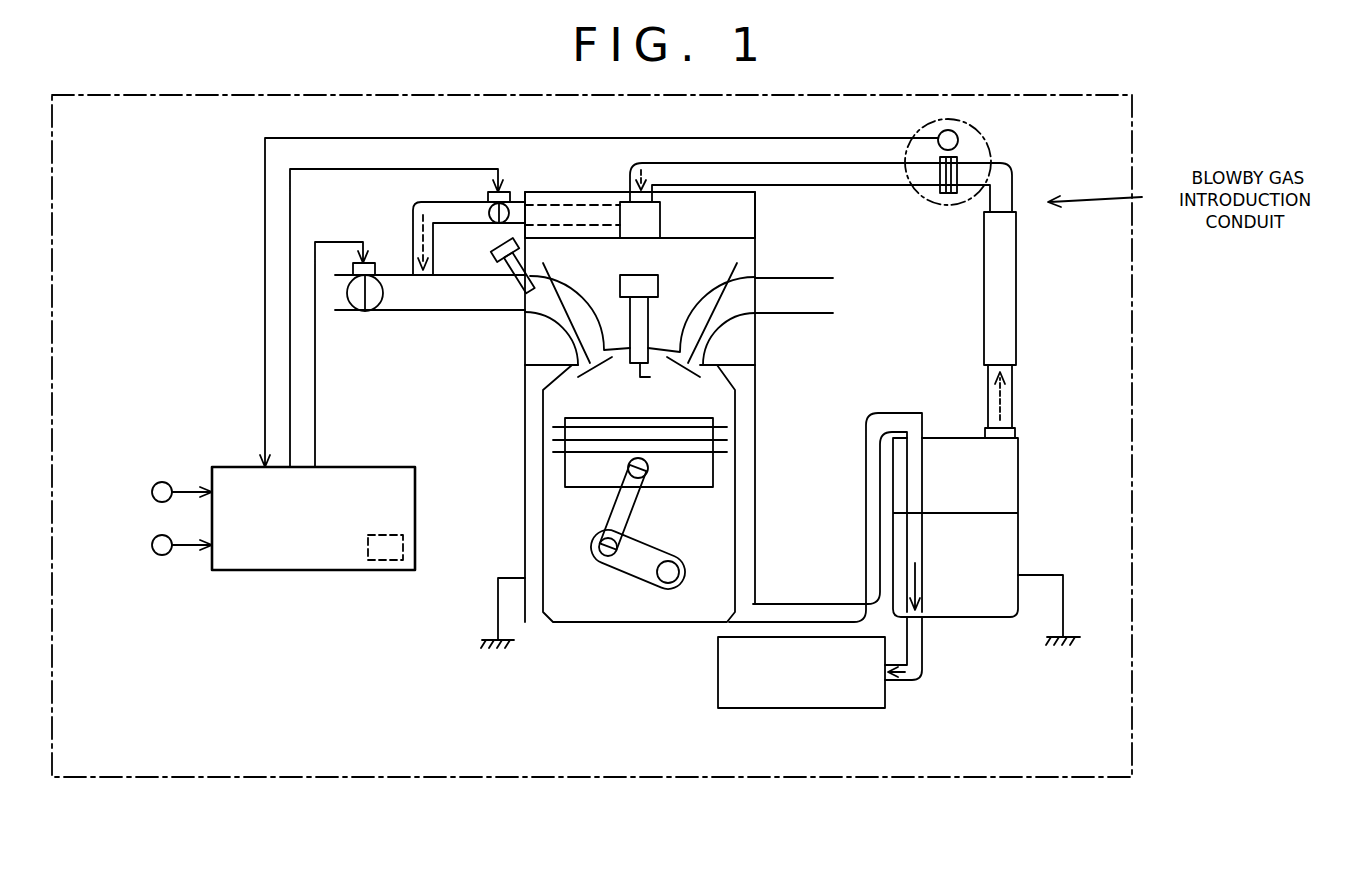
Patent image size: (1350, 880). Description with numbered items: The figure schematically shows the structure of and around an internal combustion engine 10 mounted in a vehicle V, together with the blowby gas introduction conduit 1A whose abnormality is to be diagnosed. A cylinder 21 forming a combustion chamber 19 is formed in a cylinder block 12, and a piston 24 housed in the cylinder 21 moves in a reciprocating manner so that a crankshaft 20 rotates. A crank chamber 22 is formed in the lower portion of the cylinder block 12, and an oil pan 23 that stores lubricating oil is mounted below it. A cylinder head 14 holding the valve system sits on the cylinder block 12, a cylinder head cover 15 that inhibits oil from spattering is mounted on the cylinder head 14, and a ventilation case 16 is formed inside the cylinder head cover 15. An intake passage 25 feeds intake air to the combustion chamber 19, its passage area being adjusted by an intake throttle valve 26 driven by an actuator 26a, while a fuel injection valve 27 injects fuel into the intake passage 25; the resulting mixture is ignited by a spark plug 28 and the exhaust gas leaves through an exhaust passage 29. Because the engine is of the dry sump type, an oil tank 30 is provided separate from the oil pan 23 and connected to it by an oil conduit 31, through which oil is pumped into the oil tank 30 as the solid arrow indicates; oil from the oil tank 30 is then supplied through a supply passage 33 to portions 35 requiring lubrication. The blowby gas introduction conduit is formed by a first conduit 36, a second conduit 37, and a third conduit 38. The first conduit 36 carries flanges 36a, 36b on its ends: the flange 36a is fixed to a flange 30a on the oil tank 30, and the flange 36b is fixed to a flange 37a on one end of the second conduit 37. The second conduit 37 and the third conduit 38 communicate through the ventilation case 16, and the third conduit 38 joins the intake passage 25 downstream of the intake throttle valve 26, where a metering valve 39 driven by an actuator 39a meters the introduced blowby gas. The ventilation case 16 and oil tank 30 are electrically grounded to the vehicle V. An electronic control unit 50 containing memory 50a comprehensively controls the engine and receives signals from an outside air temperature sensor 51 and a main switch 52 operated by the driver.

The blowby gas introduction conduit portion 1A is at (985, 133).
The internal combustion engine 10 is at (459, 613).
The cylinder block 12 is at (756, 437).
The cylinder head 14 is at (757, 353).
The cylinder head cover 15 is at (757, 204).
The ventilation case 16 is at (660, 212).
The combustion chamber 19 is at (657, 410).
The crankshaft 20 is at (668, 560).
The cylinder 21 is at (540, 402).
The crank chamber 22 is at (525, 507).
The oil pan 23 is at (595, 623).
The piston 24 is at (578, 488).
The intake passage 25 is at (453, 311).
The intake throttle valve 26 is at (370, 311).
The actuator 26a is at (367, 263).
The fuel injection valve 27 is at (512, 273).
The spark plug 28 is at (650, 276).
The exhaust passage 29 is at (815, 314).
The oil tank 30 is at (1018, 498).
The flange 30a is at (1015, 440).
The oil conduit 31 is at (812, 603).
The supply passage 33 is at (922, 652).
The portions requiring lubrication 35 is at (863, 708).
The first conduit 36 is at (1017, 286).
The flange 36a is at (1013, 432).
The flange 36b is at (953, 194).
The second conduit 37 is at (848, 186).
The flange 37a is at (935, 187).
The third conduit 38 is at (418, 202).
The metering valve 39 is at (492, 220).
The actuator 39a is at (505, 192).
The electronic control unit 50 is at (388, 467).
The memory 50a is at (403, 548).
The outside air temperature sensor 51 is at (152, 492).
The main switch 52 is at (152, 545).
The vehicle V is at (580, 778).